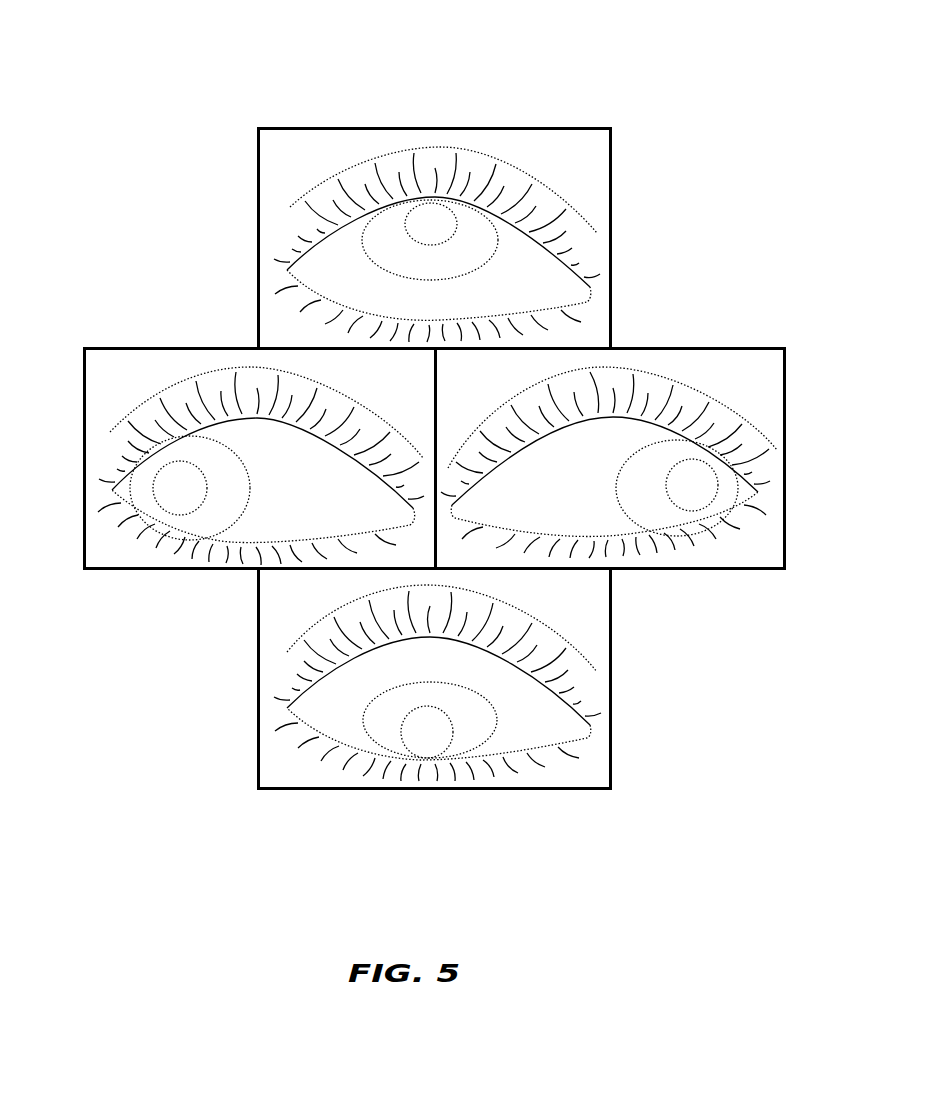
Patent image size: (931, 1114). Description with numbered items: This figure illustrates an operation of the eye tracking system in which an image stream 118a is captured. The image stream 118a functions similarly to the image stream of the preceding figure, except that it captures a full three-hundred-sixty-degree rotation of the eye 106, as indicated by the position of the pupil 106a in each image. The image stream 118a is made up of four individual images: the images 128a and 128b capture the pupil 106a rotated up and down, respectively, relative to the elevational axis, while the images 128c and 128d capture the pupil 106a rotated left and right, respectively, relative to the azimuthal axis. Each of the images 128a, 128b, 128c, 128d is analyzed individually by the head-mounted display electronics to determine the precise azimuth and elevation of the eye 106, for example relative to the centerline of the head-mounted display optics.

The image stream 118a is at (149, 79).
The image 128a is at (350, 128).
The image 128b is at (613, 690).
The image 128c is at (182, 570).
The image 128d is at (750, 348).
The eye 106 is at (325, 275).
The pupil 106a is at (470, 227).